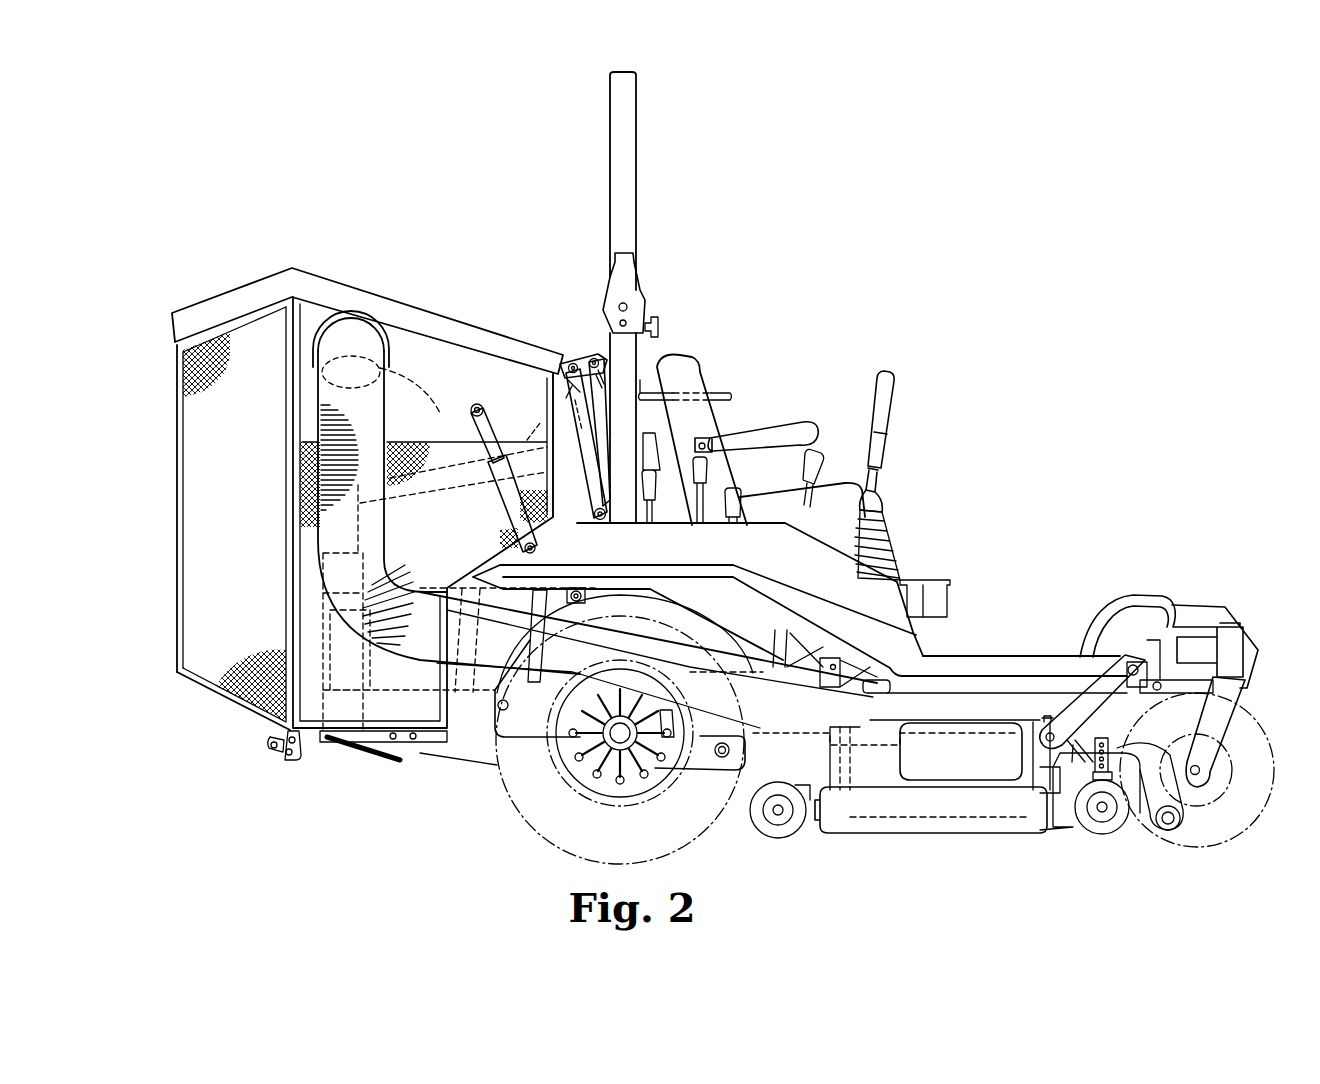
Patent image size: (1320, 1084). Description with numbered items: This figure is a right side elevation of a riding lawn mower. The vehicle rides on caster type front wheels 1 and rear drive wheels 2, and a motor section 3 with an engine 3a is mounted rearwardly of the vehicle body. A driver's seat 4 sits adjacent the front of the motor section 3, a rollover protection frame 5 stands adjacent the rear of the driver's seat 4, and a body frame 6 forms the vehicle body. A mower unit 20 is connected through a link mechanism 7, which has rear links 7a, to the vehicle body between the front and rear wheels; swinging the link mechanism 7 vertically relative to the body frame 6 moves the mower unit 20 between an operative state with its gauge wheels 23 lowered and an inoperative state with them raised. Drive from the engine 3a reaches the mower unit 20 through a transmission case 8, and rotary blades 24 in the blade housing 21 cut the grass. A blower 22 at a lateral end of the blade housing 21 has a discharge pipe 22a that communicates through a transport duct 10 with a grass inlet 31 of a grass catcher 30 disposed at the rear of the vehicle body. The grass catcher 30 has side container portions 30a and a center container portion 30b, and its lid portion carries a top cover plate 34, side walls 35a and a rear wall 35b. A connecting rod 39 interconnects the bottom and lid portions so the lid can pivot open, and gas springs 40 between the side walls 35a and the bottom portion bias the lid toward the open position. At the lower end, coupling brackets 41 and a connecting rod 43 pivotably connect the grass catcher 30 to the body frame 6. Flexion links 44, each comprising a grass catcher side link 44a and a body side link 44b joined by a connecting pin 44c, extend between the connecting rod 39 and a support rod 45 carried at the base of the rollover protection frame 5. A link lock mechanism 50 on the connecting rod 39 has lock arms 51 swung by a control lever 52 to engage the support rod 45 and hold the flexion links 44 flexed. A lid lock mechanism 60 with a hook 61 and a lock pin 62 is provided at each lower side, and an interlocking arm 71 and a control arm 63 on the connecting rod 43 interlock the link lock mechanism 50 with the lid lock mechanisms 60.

The front wheel 1 is at (1238, 830).
The rear drive wheel 2 is at (515, 815).
The motor section 3 is at (445, 460).
The engine 3a is at (601, 705).
The driver's seat 4 is at (696, 383).
The rollover protection frame 5 is at (609, 143).
The body frame 6 is at (997, 655).
The link mechanism 7 is at (1077, 693).
The rear link 7a is at (868, 688).
The transmission case 8 is at (703, 790).
The transport duct 10 is at (392, 530).
The mower unit 20 is at (1117, 775).
The blade housing 21 is at (1067, 810).
The blower 22 is at (967, 722).
The discharge pipe 22a is at (773, 737).
The gauge wheel 23 is at (1103, 823).
The rotary blade 24 is at (945, 833).
The grass catcher 30 is at (354, 471).
The side container portion 30a is at (205, 690).
The center container portion 30b is at (448, 345).
The grass inlet 31 is at (376, 365).
The top cover plate 34 is at (333, 277).
The side wall 35a is at (418, 330).
The rear wall 35b is at (172, 445).
The connecting rod 39 is at (561, 354).
The gas spring 40 is at (500, 494).
The coupling bracket 41 is at (306, 740).
The connecting rod 43 is at (279, 760).
The flexion link 44 is at (616, 423).
The grass catcher side link 44a is at (604, 392).
The body side link 44b is at (583, 415).
The connecting pin 44c is at (603, 520).
The support rod 45 is at (588, 350).
The link lock mechanism 50 is at (563, 340).
The lock arm 51 is at (578, 345).
The control lever 52 is at (733, 397).
The lid lock mechanism 60 is at (278, 784).
The hook 61 is at (304, 755).
The lock pin 62 is at (268, 736).
The control arm 63 is at (274, 753).
The interlocking arm 71 is at (567, 378).